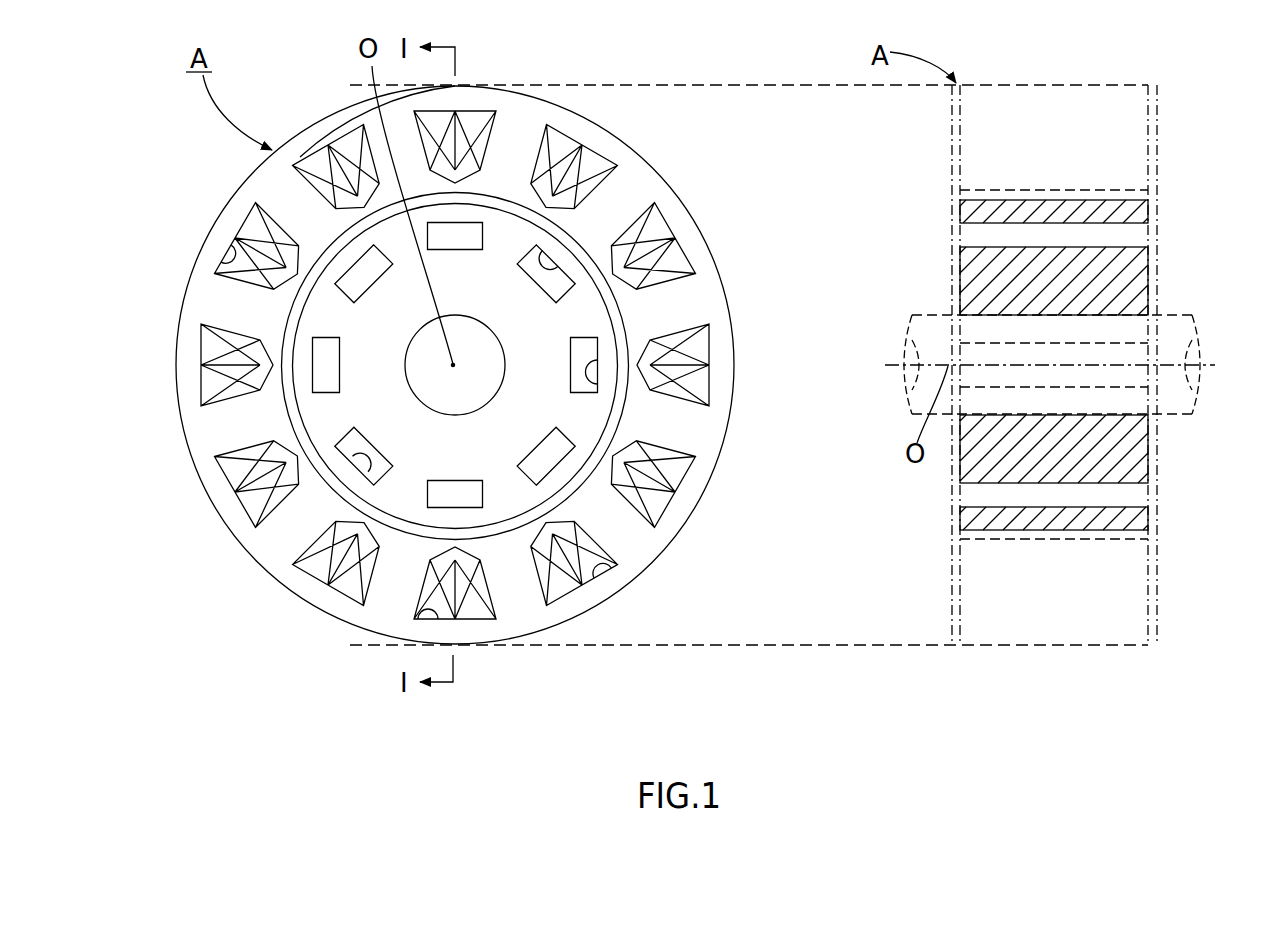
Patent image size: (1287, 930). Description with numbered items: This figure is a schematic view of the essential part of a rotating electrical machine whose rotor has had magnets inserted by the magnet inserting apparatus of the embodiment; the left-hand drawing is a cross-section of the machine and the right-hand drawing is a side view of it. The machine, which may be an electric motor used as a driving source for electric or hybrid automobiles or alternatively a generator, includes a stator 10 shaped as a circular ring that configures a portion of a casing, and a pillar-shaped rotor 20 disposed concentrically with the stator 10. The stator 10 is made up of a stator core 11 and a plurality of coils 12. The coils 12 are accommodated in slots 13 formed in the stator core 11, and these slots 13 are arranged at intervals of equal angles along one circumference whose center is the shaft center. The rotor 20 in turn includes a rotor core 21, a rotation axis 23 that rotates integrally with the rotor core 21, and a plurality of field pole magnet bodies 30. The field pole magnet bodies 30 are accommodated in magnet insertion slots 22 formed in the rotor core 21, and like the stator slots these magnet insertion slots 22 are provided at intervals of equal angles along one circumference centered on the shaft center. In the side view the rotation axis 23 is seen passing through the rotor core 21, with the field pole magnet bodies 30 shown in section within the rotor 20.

The stator 10 is at (640, 586).
The stator core 11 is at (318, 137).
The coils 12 is at (254, 222).
The slots 13 is at (233, 245).
The rotor 20 is at (289, 321).
The rotor core 21 is at (504, 232).
The magnet insertion slots 22 is at (558, 278).
The rotation axis 23 is at (448, 395).
The field pole magnet bodies 30 is at (574, 266).